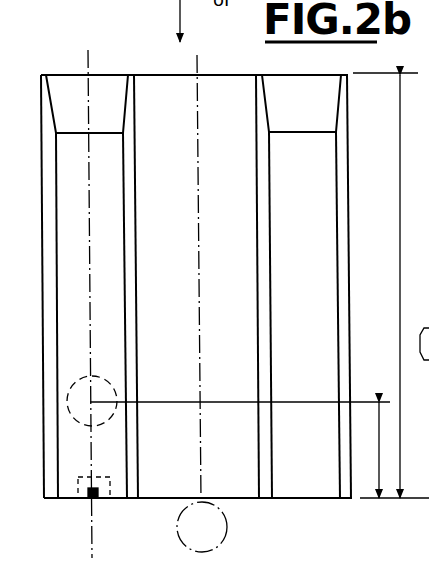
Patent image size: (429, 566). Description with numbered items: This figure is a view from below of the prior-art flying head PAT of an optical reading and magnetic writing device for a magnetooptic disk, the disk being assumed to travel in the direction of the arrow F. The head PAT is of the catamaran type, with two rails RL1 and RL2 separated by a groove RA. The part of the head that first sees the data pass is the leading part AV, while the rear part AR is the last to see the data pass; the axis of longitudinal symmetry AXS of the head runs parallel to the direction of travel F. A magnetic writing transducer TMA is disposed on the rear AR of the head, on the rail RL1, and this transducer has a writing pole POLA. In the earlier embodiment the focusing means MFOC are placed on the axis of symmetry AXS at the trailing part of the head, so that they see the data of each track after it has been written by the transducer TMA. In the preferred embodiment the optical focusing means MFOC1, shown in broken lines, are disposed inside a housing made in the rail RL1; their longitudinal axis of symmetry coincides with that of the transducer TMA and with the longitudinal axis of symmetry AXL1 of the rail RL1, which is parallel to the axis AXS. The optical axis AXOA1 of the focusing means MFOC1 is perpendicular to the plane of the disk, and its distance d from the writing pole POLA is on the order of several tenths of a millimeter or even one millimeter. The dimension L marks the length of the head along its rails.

The flying head PAT is at (118, 53).
The groove RA is at (158, 90).
The direction of travel arrow F is at (173, 21).
The axis of longitudinal symmetry AXS is at (197, 36).
The leading part AV is at (335, 73).
The longitudinal axis of symmetry of the rail AXL1 is at (90, 230).
The length L is at (391, 285).
The first rail RL1 is at (110, 285).
The second rail RL2 is at (323, 291).
The optical axis of the focusing means AXOA1 is at (84, 386).
The optical focusing means MFOC1 is at (134, 410).
The distance d is at (386, 450).
The magnetic writing transducer TMA is at (88, 500).
The writing pole POLA is at (98, 500).
The focusing means MFOC is at (220, 532).
The rear part AR is at (325, 502).